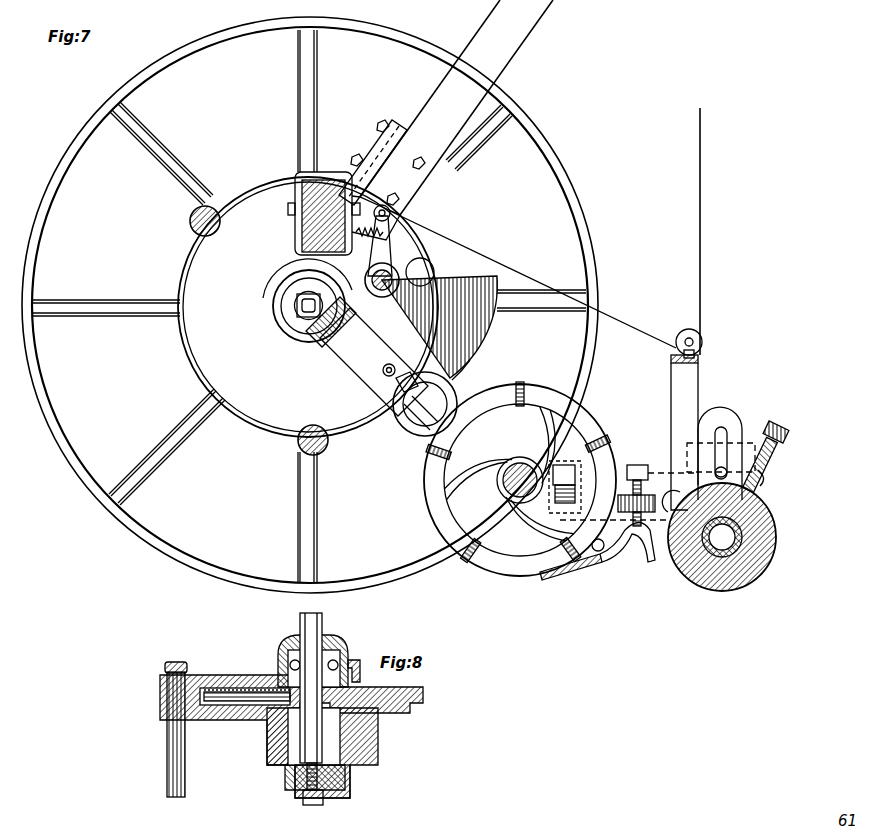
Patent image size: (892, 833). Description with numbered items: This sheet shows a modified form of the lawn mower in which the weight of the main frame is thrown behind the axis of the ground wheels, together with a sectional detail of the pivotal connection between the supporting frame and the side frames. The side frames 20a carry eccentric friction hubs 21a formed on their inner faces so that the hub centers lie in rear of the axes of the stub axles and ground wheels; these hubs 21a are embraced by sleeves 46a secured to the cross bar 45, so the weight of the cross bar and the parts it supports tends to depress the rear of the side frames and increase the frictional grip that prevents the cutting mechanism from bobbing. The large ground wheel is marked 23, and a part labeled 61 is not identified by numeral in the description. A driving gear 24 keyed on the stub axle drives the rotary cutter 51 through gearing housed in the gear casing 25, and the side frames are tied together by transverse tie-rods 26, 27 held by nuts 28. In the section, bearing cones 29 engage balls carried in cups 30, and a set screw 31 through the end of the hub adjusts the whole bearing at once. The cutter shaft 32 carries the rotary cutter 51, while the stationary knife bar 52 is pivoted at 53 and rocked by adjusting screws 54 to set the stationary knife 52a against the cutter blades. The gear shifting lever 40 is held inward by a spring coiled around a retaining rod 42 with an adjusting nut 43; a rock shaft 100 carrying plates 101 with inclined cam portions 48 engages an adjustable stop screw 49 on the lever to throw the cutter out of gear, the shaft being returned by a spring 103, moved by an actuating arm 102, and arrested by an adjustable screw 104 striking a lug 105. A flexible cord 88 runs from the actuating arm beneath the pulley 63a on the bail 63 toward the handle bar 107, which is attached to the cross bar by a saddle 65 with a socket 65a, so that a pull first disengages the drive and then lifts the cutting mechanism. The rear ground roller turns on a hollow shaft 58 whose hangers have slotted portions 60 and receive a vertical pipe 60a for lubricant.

In FIG. 7, the side frames 20a is at (308, 307).
In FIG. 8, the side frames 20a is at (245, 716).
In FIG. 7, the eccentric friction hubs 21a is at (304, 282).
In FIG. 8, the eccentric friction hubs 21a is at (362, 770).
In FIG. 7, the wheel rim 23 is at (178, 563).
In FIG. 8, the driving gear 24 is at (232, 690).
In FIG. 8, the exterior gear casing 25 is at (280, 680).
In FIG. 7, the transverse tie-rod 26 is at (192, 228).
In FIG. 8, the transverse tie-rod 26 is at (172, 765).
In FIG. 7, the transverse tie-rod 27 is at (303, 452).
In FIG. 8, the nuts 28 is at (165, 667).
In FIG. 8, the bearing cones 29 is at (286, 665).
In FIG. 8, the cups 30 is at (345, 650).
In FIG. 8, the set screw 31 is at (318, 802).
In FIG. 7, the cutter shaft 32 is at (560, 470).
In FIG. 7, the gear shifting lever 40 is at (368, 360).
In FIG. 7, the retaining rod 42 is at (400, 390).
In FIG. 7, the adjusting nut 43 is at (385, 376).
In FIG. 7, the cross bar 45 is at (318, 215).
In FIG. 7, the sleeves 46a is at (275, 312).
In FIG. 8, the sleeves 46a is at (380, 737).
In FIG. 7, the inclined cam portions 48 is at (453, 364).
In FIG. 7, the adjustable stop screw 49 is at (418, 425).
In FIG. 7, the rotary cutter 51 is at (548, 480).
In FIG. 7, the stationary knife bar 52 is at (618, 545).
In FIG. 7, the stationary knife 52a is at (566, 578).
In FIG. 7, the pivot 53 is at (600, 552).
In FIG. 7, the adjusting screws 54 is at (637, 465).
In FIG. 7, the hollow shaft 58 is at (725, 560).
In FIG. 7, the slotted portions 60 is at (728, 420).
In FIG. 7, the vertically disposed pipe 60a is at (777, 484).
In FIG. 7, the bolt 61 is at (776, 426).
In FIG. 7, the bail 63 is at (686, 392).
In FIG. 7, the pulley 63a is at (704, 346).
In FIG. 7, the saddle 65 is at (296, 190).
In FIG. 7, the arm or socket 65a is at (398, 125).
In FIG. 7, the flexible cord or chain 88 is at (702, 246).
In FIG. 7, the rock shaft 100 is at (394, 270).
In FIG. 7, the plates 101 is at (481, 285).
In FIG. 7, the actuating arm 102 is at (391, 232).
In FIG. 7, the spring 103 is at (372, 230).
In FIG. 7, the adjustable screw 104 is at (292, 302).
In FIG. 7, the lug 105 is at (354, 350).
In FIG. 7, the handle bar 107 is at (530, 6).